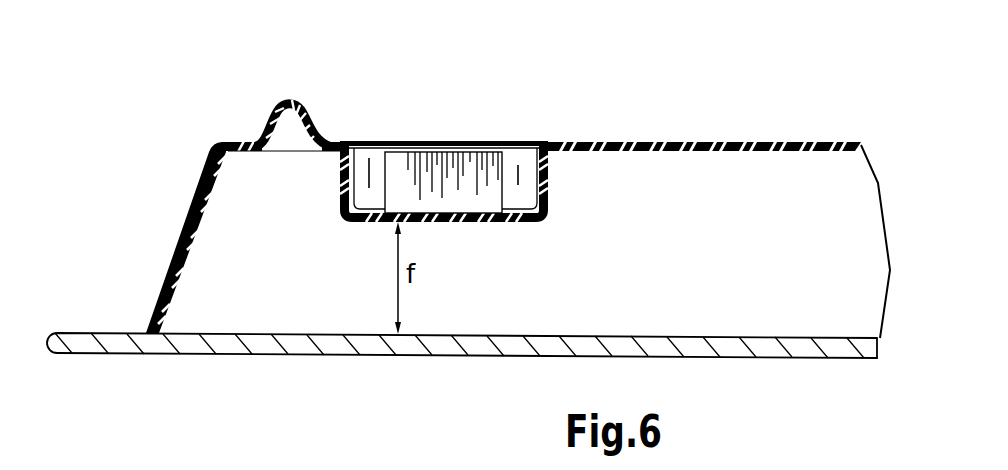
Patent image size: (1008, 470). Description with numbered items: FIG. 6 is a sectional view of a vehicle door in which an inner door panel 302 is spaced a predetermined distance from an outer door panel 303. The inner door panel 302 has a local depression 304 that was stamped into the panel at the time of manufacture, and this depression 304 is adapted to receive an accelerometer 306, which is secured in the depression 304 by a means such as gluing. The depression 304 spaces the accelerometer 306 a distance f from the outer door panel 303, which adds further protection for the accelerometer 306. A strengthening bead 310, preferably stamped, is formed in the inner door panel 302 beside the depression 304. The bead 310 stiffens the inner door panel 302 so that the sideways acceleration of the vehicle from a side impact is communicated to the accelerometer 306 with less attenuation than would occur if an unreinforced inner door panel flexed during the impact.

The inner door panel 302 is at (247, 141).
The outer door panel 303 is at (299, 345).
The local depression 304 is at (376, 127).
The accelerometer 306 is at (452, 197).
The strengthening bead 310 is at (292, 104).